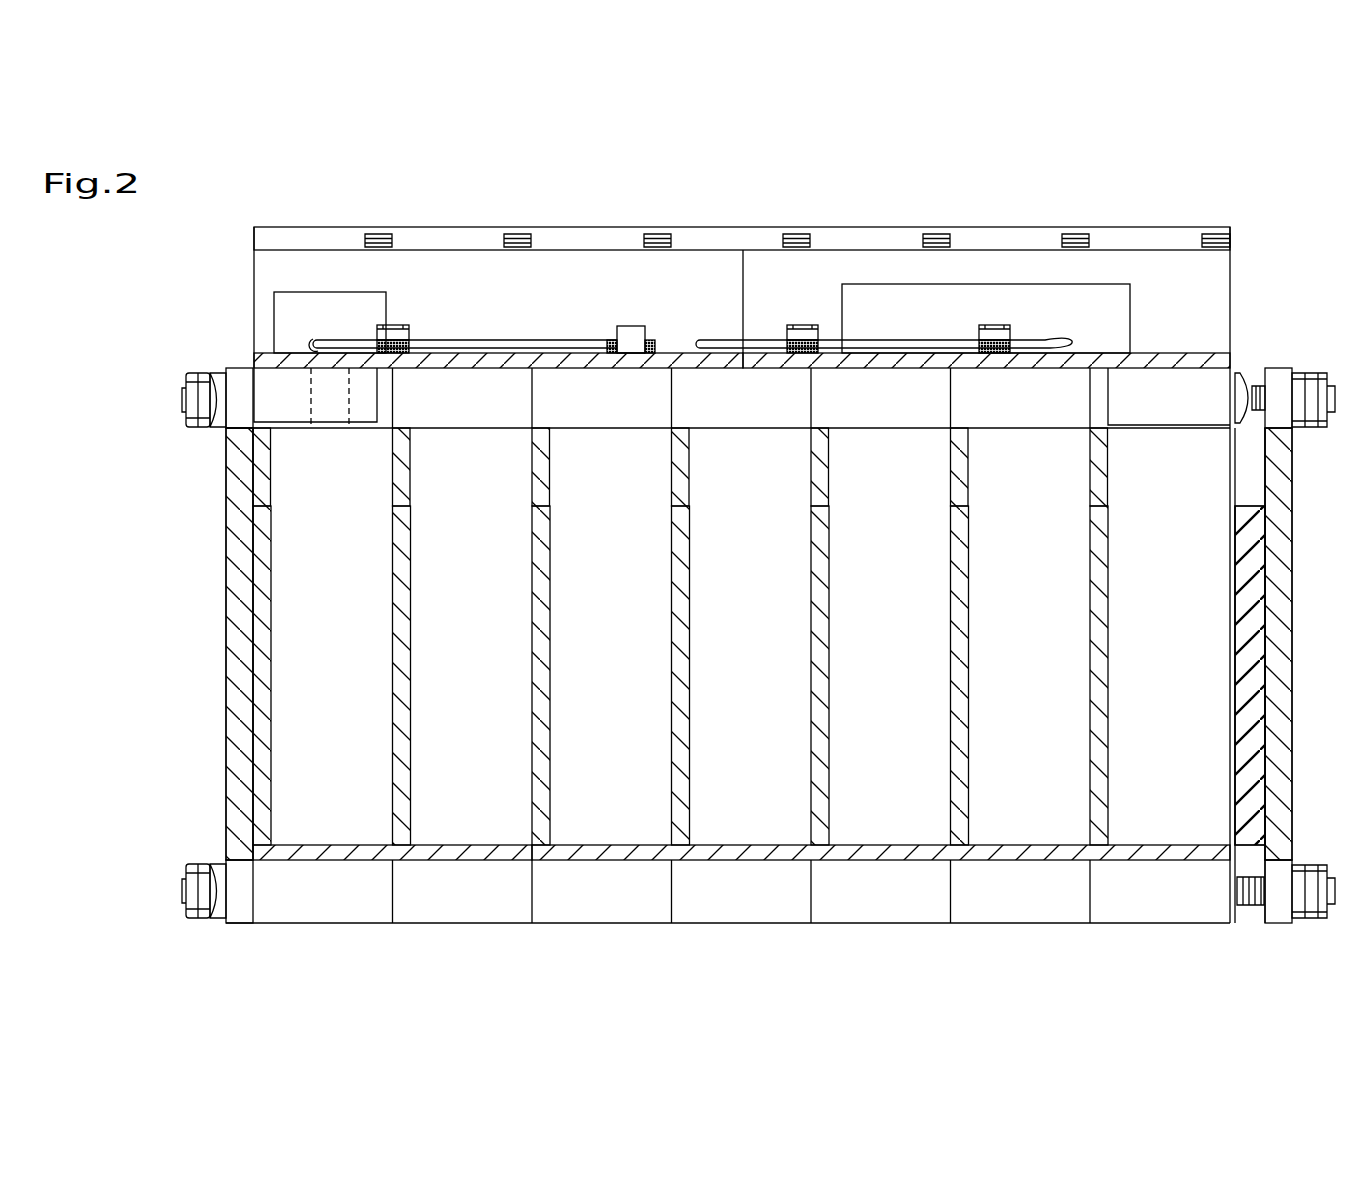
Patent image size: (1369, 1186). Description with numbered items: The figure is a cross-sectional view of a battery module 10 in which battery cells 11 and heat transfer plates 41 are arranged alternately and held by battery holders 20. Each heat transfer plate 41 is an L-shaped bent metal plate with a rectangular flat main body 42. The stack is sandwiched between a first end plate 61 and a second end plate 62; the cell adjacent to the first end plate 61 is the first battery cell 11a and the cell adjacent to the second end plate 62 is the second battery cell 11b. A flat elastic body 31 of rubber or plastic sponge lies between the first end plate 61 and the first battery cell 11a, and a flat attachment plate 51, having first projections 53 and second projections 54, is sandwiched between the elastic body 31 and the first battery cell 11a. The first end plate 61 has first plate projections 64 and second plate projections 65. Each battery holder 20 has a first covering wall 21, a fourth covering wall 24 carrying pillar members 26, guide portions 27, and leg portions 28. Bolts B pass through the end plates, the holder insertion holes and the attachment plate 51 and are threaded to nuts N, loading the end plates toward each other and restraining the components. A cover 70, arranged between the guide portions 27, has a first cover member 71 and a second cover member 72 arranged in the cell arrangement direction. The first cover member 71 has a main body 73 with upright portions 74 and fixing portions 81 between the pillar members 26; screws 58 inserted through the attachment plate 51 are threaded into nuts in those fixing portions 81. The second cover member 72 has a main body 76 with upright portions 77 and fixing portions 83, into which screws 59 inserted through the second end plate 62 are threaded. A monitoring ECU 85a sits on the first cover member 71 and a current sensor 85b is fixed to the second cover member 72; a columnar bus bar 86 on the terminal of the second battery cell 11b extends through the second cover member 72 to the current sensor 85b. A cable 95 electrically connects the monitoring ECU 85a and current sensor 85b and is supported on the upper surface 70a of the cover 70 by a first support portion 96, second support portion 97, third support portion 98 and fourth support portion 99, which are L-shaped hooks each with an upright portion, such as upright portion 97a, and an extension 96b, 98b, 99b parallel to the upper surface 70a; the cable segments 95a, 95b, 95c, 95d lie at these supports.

The battery module 10 is at (177, 208).
The battery cell 11 is at (497, 853).
The first battery cell 11a is at (1240, 645).
The second battery cell 11b is at (282, 678).
The battery holder 20 is at (422, 926).
The first covering wall 21 is at (317, 845).
The fourth covering wall 24 is at (272, 457).
The pillar member 26 is at (612, 408).
The guide portion 27 is at (312, 232).
The leg portion 28 is at (298, 925).
The elastic body 31 is at (1258, 578).
The heat transfer plate 41 is at (968, 582).
The main body 42 is at (968, 637).
The attachment plate 51 is at (1258, 537).
The first projection 53 is at (1240, 387).
The second projection 54 is at (1237, 888).
The screw 58 is at (1247, 375).
The screw 59 is at (215, 375).
The first end plate 61 is at (1292, 500).
The second end plate 62 is at (226, 598).
The first plate projection 64 is at (240, 372).
The second plate projection 65 is at (240, 925).
The cover 70 is at (778, 189).
The upper surface 70a is at (1215, 352).
The first cover member 71 is at (1013, 277).
The second cover member 72 is at (710, 250).
The main body 73 is at (1020, 360).
The upright portion 74 is at (1013, 277).
The main body 76 is at (487, 360).
The upright portion 77 is at (490, 272).
The fixing portion 81 is at (1158, 420).
The fixing portion 83 is at (348, 428).
The monitoring ECU 85a is at (1131, 310).
The current sensor 85b is at (387, 323).
The bus bar 86 is at (360, 396).
The cable 95 is at (567, 340).
The bus bar joint portion 95a is at (830, 343).
The bus bar joint portion 95b is at (652, 342).
The bus bar joint portion 95c is at (975, 343).
The bus bar joint portion 95d is at (410, 343).
The first support portion 96 is at (810, 295).
The extension 96b is at (816, 326).
The second support portion 97 is at (630, 340).
The upright portion 97a is at (632, 357).
The third support portion 98 is at (998, 263).
The extension 98b is at (990, 326).
The fourth support portion 99 is at (412, 297).
The extension 99b is at (406, 328).
The bolt B is at (205, 430).
The nut N is at (1315, 428).